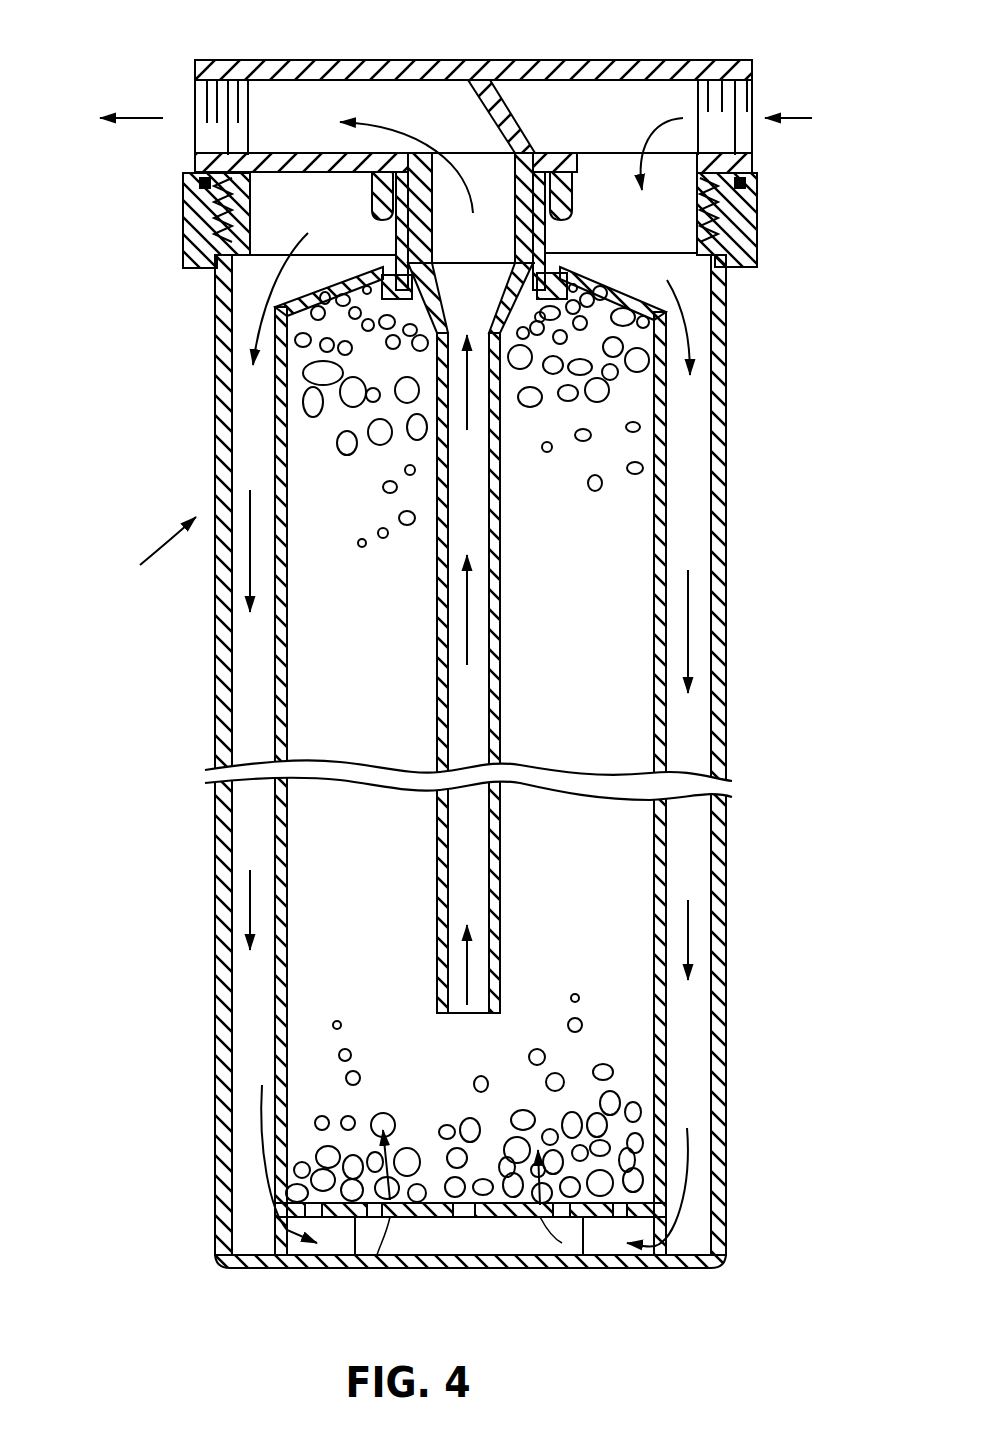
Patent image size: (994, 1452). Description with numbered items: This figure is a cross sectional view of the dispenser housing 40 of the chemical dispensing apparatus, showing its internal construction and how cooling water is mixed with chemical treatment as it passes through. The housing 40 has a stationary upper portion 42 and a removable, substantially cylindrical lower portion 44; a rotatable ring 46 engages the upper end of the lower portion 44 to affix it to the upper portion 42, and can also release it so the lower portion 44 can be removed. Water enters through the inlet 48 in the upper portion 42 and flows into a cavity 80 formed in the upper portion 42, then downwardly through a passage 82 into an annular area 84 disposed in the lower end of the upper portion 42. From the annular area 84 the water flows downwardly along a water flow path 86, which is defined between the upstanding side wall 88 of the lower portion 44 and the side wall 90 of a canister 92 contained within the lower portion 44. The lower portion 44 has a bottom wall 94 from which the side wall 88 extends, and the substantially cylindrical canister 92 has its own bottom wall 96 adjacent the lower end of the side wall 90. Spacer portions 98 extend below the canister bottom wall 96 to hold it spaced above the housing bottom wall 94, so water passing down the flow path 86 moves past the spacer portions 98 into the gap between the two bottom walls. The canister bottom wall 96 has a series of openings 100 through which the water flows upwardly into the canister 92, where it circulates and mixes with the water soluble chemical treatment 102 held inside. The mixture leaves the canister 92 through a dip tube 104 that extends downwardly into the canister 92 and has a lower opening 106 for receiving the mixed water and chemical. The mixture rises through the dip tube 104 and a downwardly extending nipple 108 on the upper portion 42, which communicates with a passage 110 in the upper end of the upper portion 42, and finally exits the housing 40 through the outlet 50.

The dispenser housing 40 is at (143, 552).
The upper portion 42 is at (548, 60).
The lower portion 44 is at (215, 718).
The rotatable ring 46 is at (183, 228).
The inlet 48 is at (752, 90).
The outlet 50 is at (195, 105).
The cavity 80 is at (628, 80).
The passage 82 is at (678, 194).
The annular area 84 is at (645, 232).
The water flow path 86 is at (240, 657).
The upstanding side wall 88 is at (724, 472).
The side wall 90 is at (667, 525).
The canister 92 is at (683, 562).
The bottom wall 94 is at (585, 1268).
The bottom wall 96 is at (507, 1217).
The spacer portions 98 is at (293, 1250).
The openings 100 is at (372, 1217).
The chemical treatment 102 is at (613, 1118).
The dip tube 104 is at (500, 637).
The lower opening 106 is at (470, 1016).
The nipple 108 is at (470, 208).
The passage 110 is at (363, 155).